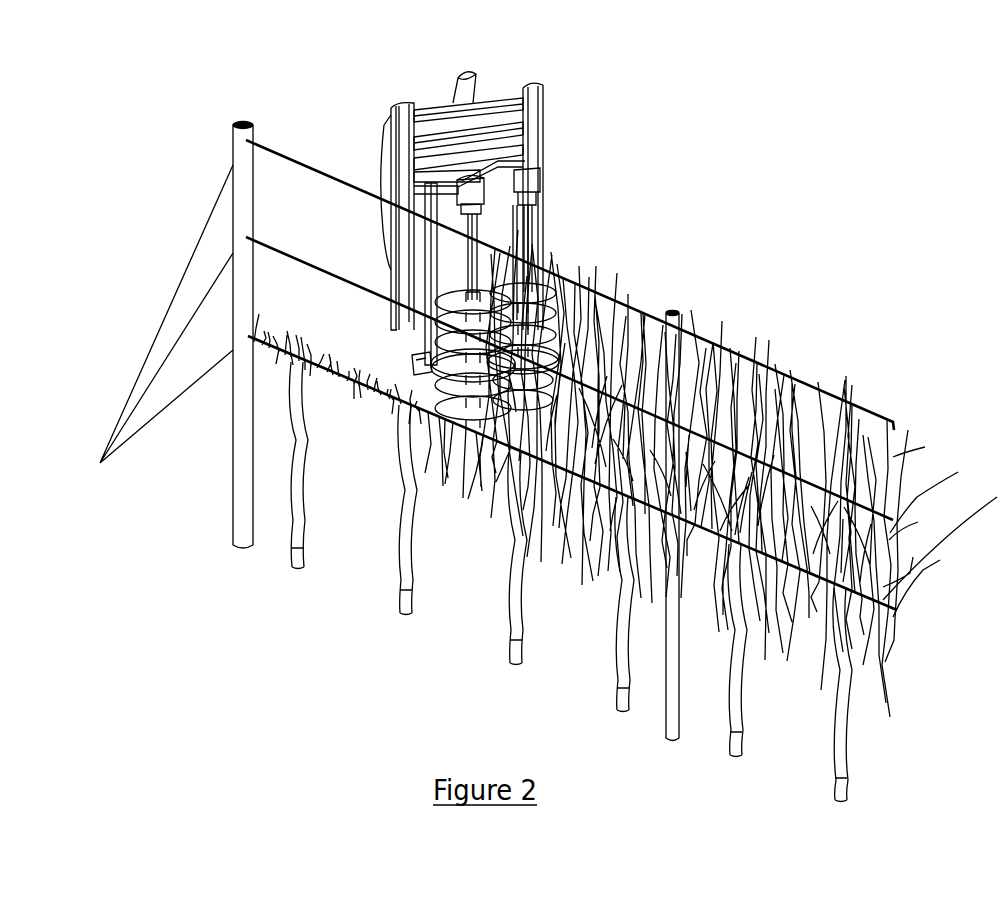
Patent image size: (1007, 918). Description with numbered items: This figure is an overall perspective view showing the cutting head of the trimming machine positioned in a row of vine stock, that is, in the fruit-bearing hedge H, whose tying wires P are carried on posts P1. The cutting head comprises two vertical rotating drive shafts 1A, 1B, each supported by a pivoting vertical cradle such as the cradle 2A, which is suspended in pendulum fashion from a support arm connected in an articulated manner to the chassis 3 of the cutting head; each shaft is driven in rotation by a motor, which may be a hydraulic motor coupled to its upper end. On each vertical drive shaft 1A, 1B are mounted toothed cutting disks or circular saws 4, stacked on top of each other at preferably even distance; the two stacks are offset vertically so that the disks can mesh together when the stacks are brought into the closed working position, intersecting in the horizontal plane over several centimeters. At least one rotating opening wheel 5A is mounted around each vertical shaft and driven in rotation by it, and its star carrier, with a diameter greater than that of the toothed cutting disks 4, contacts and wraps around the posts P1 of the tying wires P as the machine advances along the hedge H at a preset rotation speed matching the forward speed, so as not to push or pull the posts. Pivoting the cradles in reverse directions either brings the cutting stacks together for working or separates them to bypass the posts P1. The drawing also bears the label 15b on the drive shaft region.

The vertical rotating drive shaft 1A is at (472, 250).
The vertical rotating drive shaft 1B is at (545, 190).
The pivoting vertical cradle 2A is at (428, 278).
The chassis 3 is at (442, 155).
The toothed cutting disks 4 is at (423, 318).
The rotating opening wheel 5A is at (420, 365).
The drive shaft 15b is at (538, 240).
The tying wires P is at (323, 148).
The posts P1 is at (243, 192).
The fruit-bearing hedge H is at (792, 348).